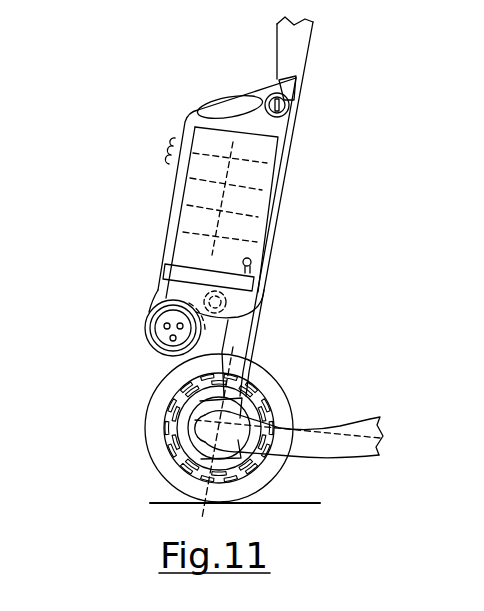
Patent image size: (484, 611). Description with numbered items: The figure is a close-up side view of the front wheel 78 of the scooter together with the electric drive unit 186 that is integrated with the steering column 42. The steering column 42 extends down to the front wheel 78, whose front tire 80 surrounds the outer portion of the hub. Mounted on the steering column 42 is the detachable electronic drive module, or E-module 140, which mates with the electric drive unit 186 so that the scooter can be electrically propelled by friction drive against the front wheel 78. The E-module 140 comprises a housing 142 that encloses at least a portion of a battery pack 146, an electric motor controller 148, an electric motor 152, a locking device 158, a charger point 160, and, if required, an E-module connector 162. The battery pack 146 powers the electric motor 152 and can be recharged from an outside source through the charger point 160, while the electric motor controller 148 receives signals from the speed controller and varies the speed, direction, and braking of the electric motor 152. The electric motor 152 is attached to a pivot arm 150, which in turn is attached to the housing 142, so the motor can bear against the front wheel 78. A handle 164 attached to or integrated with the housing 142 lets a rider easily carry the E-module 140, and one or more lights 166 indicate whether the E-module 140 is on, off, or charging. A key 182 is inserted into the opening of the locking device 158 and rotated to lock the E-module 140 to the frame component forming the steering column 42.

The steering column 42 is at (300, 63).
The front wheel 78 is at (148, 407).
The front tire 80 is at (166, 382).
The detachable electronic drive module (E-module) 140 is at (282, 146).
The housing 142 is at (186, 112).
The battery pack 146 is at (200, 141).
The electric motor controller 148 is at (182, 273).
The pivot arm 150 is at (218, 312).
The electric motor 152 is at (146, 333).
The locking device 158 is at (290, 107).
The charger point 160 is at (256, 263).
The E-module connector 162 is at (288, 80).
The handle 164 is at (220, 106).
The lights 166 is at (170, 163).
The key 182 is at (274, 98).
The electric drive unit 186 is at (292, 197).